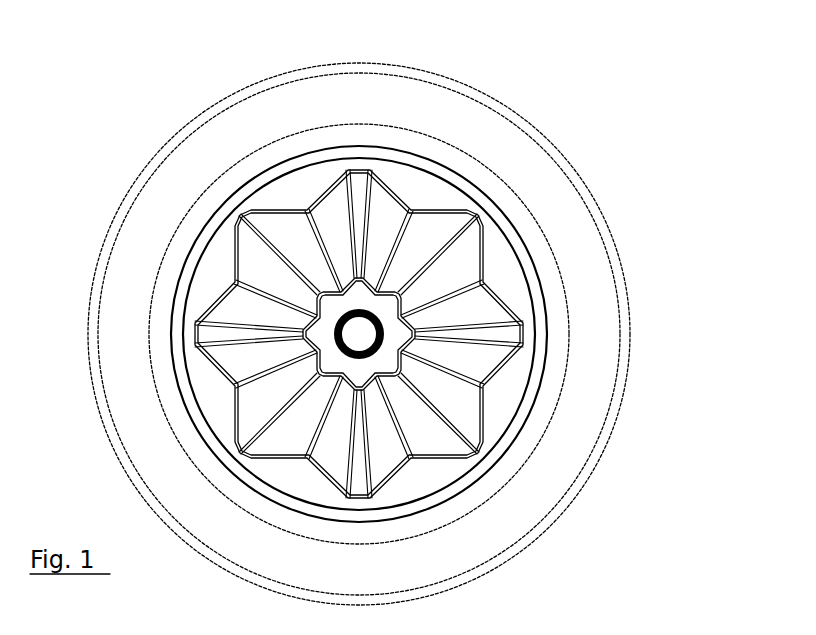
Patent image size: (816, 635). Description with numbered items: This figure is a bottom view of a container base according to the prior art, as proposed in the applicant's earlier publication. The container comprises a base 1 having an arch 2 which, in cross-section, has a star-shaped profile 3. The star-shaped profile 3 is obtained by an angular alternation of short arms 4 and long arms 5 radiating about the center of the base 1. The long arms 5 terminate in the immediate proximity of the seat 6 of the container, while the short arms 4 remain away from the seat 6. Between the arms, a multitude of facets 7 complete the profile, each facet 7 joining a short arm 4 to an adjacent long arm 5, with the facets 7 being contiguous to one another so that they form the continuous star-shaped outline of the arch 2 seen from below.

The base 1 is at (596, 98).
The arch 2 is at (510, 273).
The star-shaped profile 3 is at (205, 381).
The short arms 4 is at (247, 288).
The long arms 5 is at (357, 190).
The seat 6 is at (535, 410).
The facets 7 is at (420, 230).